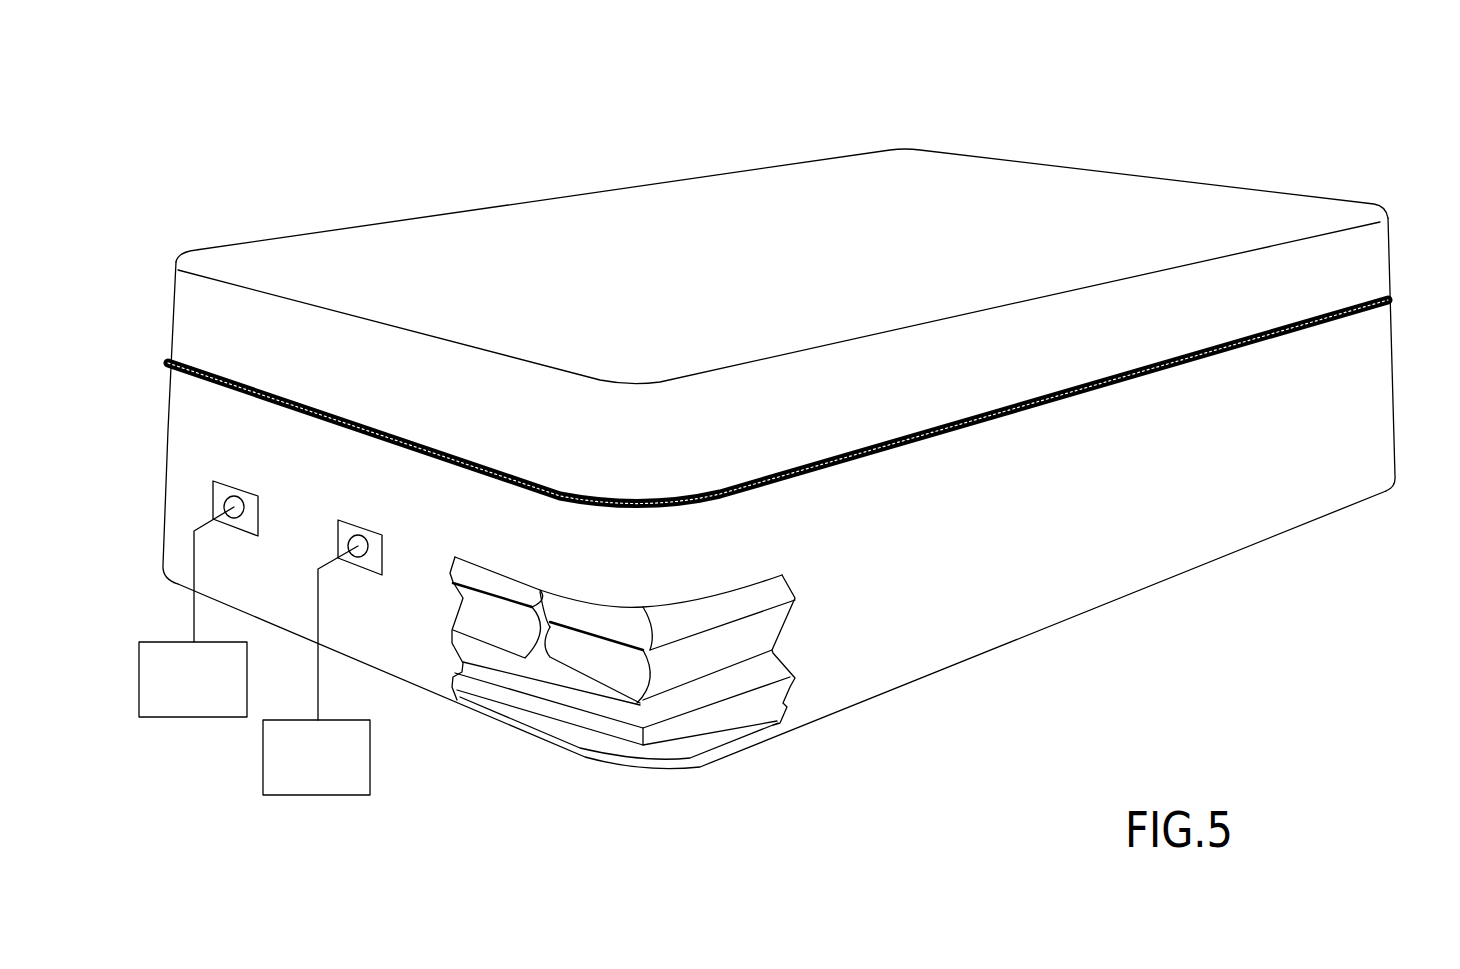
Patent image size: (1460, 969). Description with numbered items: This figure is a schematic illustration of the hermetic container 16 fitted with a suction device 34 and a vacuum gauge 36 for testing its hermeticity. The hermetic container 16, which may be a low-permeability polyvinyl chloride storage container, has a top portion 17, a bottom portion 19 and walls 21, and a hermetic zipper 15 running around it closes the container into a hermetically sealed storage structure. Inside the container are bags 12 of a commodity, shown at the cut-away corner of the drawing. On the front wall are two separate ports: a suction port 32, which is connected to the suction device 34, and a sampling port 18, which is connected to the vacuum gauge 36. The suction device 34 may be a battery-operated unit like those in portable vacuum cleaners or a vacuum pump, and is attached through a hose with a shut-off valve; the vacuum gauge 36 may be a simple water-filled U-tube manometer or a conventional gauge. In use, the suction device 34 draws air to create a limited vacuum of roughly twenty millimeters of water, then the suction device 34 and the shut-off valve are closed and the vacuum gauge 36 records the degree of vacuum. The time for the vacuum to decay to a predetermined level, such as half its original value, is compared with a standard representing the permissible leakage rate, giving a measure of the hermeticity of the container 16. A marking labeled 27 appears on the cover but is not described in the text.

The bags 12 is at (578, 658).
The hermetic zipper 15 is at (282, 398).
The hermetic container 16 is at (1190, 112).
The top portion 17 is at (962, 180).
The sampling port 18 is at (234, 507).
The bottom portion 19 is at (1203, 560).
The walls 21 is at (163, 478).
The cover 27 is at (510, 420).
The suction port 32 is at (357, 567).
The suction device 34 is at (310, 797).
The vacuum gauge 36 is at (188, 720).